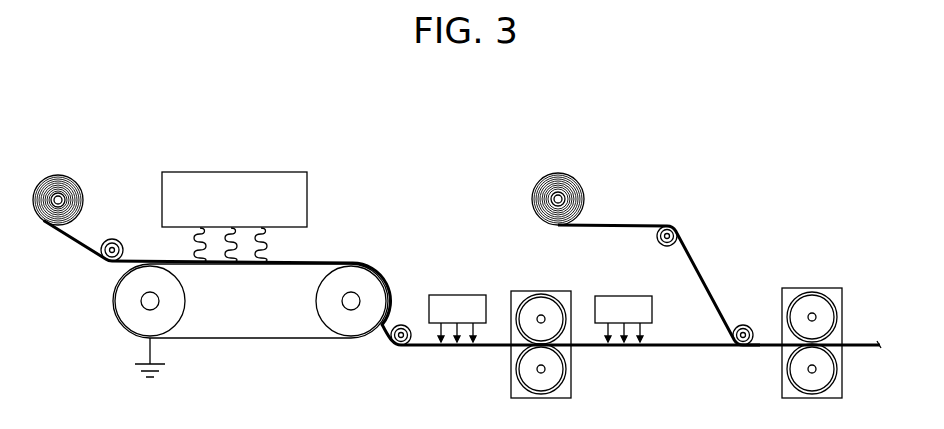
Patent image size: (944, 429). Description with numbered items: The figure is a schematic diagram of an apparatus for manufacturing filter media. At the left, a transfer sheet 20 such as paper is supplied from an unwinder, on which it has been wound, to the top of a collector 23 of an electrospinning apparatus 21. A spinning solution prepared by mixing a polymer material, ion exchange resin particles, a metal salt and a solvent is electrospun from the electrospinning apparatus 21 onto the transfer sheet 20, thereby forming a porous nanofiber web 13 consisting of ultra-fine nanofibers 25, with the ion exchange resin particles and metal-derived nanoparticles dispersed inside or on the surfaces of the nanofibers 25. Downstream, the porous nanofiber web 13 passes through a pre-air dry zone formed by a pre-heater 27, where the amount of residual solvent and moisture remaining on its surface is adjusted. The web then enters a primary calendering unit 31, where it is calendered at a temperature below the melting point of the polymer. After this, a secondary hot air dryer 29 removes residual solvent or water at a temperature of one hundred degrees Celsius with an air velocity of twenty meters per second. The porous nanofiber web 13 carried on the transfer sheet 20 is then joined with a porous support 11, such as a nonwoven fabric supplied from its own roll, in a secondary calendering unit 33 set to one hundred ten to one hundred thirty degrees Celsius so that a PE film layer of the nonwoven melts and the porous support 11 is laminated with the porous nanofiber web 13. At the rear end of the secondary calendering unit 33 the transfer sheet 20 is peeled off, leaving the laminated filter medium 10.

The laminated filter medium 10 is at (862, 343).
The porous support 11 is at (626, 222).
The porous nanofiber web 13 is at (340, 263).
The transfer sheet 20 is at (75, 243).
The electrospinning apparatus 21 is at (308, 190).
The collector 23 is at (255, 339).
The nanofibers 25 is at (270, 243).
The pre-heater 27 is at (457, 293).
The secondary hot air dryer 29 is at (617, 294).
The primary calendering unit 31 is at (572, 383).
The secondary calendering unit 33 is at (843, 378).